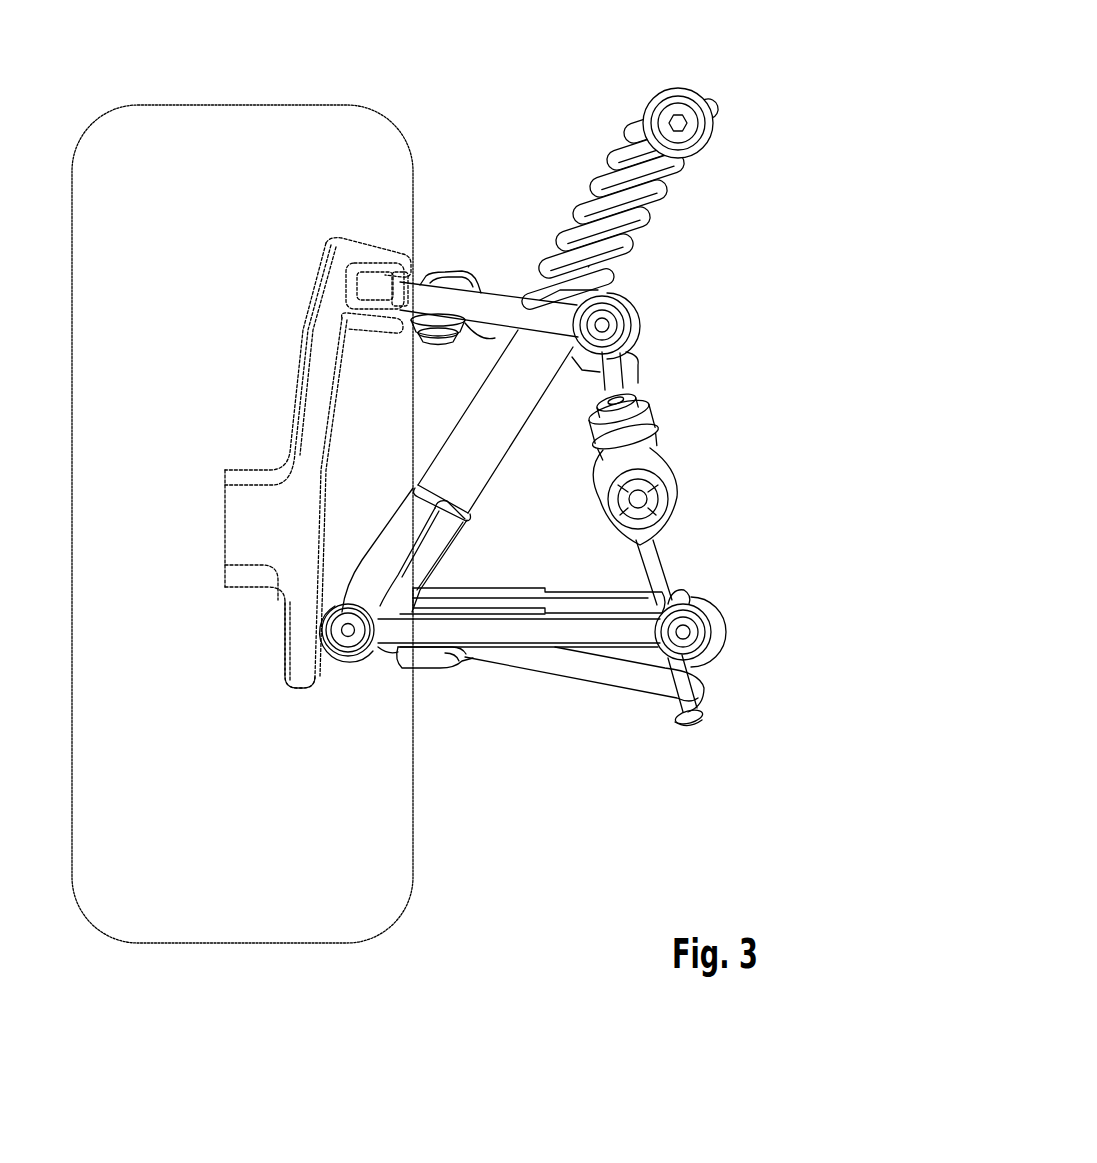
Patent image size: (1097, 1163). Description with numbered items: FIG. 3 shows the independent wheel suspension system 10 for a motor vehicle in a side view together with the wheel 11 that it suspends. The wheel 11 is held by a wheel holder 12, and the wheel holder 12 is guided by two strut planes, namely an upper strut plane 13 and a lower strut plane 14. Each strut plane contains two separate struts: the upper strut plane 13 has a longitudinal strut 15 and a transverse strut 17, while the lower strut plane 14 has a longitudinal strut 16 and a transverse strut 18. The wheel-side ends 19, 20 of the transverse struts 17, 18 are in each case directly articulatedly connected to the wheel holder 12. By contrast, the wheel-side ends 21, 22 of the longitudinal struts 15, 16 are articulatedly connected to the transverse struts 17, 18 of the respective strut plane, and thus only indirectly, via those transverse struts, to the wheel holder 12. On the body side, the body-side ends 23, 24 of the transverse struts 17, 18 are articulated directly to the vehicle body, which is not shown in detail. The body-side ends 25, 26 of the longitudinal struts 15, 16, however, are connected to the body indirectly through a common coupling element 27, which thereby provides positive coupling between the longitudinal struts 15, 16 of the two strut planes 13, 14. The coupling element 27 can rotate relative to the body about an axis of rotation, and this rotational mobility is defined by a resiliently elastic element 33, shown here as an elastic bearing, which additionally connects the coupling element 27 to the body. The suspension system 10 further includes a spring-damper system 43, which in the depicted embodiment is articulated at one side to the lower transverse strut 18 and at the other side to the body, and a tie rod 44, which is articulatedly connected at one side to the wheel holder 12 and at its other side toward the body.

The independent wheel suspension system 10 is at (473, 73).
The wheel 11 is at (178, 120).
The wheel holder 12 is at (318, 463).
The upper strut plane 13 is at (680, 333).
The lower strut plane 14 is at (733, 618).
The longitudinal strut 15 is at (586, 364).
The longitudinal strut 16 is at (597, 676).
The transverse strut 17 is at (500, 306).
The transverse strut 18 is at (500, 636).
The wheel-side end 19 is at (380, 288).
The wheel-side end 20 is at (276, 620).
The wheel-side end 21 is at (436, 344).
The wheel-side end 22 is at (437, 664).
The body-side end 23 is at (612, 321).
The body-side end 24 is at (694, 632).
The body-side end 25 is at (632, 373).
The body-side end 26 is at (667, 690).
The common coupling element 27 is at (672, 466).
The resiliently elastic element 33 is at (650, 500).
The spring-damper system 43 is at (705, 84).
The tie rod 44 is at (568, 602).